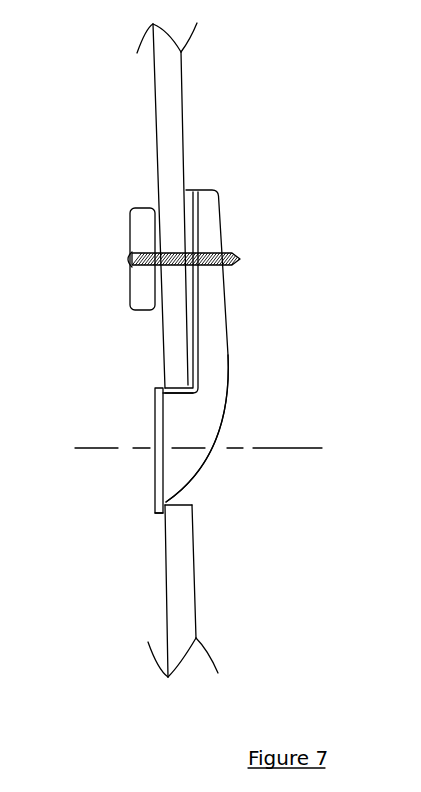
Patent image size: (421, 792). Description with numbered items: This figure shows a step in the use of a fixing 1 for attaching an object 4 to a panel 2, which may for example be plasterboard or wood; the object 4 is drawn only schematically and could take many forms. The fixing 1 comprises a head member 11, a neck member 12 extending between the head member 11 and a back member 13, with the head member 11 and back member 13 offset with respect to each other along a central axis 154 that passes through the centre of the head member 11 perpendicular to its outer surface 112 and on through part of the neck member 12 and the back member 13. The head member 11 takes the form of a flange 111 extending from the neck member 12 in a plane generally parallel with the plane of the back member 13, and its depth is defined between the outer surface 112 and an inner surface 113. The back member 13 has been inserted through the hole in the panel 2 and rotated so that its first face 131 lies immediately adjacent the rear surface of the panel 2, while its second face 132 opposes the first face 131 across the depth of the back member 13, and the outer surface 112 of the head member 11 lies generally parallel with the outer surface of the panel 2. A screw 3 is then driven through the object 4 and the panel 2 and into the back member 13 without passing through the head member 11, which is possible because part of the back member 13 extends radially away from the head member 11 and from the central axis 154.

The fixing 1 is at (309, 247).
The panel 2 is at (168, 87).
The screw 3 is at (125, 260).
The object 4 is at (135, 292).
The head member 11 is at (99, 463).
The neck member 12 is at (182, 420).
The back member 13 is at (177, 312).
The flange 111 is at (157, 514).
The outer surface 112 is at (155, 463).
The inner surface 113 is at (163, 457).
The first face 131 is at (188, 202).
The second face 132 is at (221, 213).
The central axis 154 is at (308, 445).